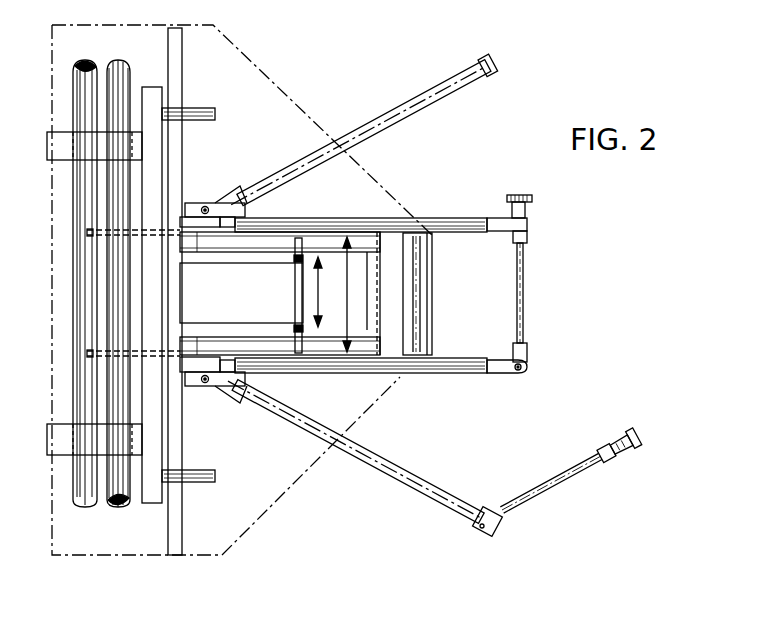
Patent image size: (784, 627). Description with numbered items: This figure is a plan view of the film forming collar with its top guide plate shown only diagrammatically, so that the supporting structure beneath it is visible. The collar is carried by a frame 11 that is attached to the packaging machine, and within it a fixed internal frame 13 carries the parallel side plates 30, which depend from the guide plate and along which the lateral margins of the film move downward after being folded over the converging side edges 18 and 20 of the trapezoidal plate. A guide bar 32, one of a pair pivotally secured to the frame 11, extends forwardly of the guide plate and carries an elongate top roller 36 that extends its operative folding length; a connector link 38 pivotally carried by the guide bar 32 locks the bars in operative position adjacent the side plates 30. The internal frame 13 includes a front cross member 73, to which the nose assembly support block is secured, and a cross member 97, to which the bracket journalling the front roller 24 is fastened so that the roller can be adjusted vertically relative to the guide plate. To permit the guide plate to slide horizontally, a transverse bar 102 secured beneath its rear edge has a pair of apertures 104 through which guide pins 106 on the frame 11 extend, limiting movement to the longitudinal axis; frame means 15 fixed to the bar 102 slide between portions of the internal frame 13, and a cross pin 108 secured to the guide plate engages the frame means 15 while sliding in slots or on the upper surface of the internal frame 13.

The frame 11 is at (152, 505).
The internal frame 13 is at (349, 294).
The frame means 15 is at (321, 292).
The side edge 18 is at (313, 460).
The side edge 20 is at (303, 112).
The front roller 24 is at (423, 300).
The side plates 30 is at (195, 252).
The guide bar 32 is at (518, 375).
The top rollers 36 is at (447, 217).
The connector link 38 is at (520, 303).
The front cross member 73 is at (373, 297).
The cross member 97 is at (408, 312).
The bar 102 is at (177, 520).
The apertures 104 is at (168, 110).
The guide pins 106 is at (217, 475).
The cross pin 108 is at (298, 280).